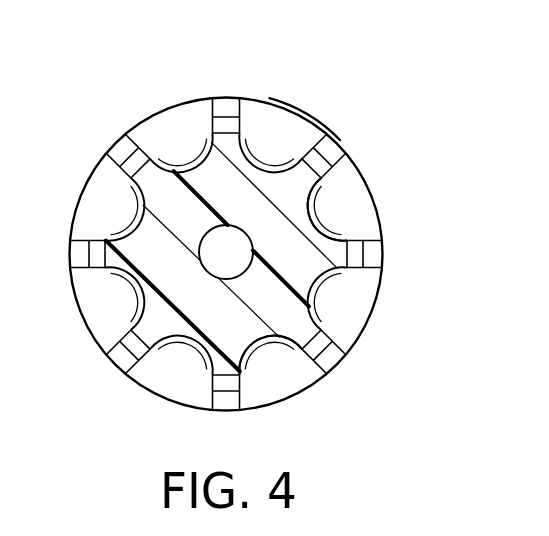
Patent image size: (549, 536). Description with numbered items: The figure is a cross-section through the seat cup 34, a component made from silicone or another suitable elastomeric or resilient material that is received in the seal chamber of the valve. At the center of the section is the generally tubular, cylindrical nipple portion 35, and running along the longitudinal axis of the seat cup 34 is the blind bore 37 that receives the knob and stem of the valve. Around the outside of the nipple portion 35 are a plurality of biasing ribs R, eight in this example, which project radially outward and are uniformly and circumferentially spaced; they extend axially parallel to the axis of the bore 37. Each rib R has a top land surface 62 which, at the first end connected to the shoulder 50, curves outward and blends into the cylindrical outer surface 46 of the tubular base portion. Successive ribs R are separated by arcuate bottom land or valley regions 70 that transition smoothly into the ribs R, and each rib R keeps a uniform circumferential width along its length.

The seat cup component 34 is at (152, 411).
The cylindrical outer surface 46 is at (297, 113).
The top land surface 62 is at (120, 143).
The shoulder 50 is at (98, 302).
The bottom land region 70 is at (187, 152).
The biasing rib R is at (320, 185).
The nipple portion 35 is at (298, 275).
The blind bore 37 is at (240, 229).